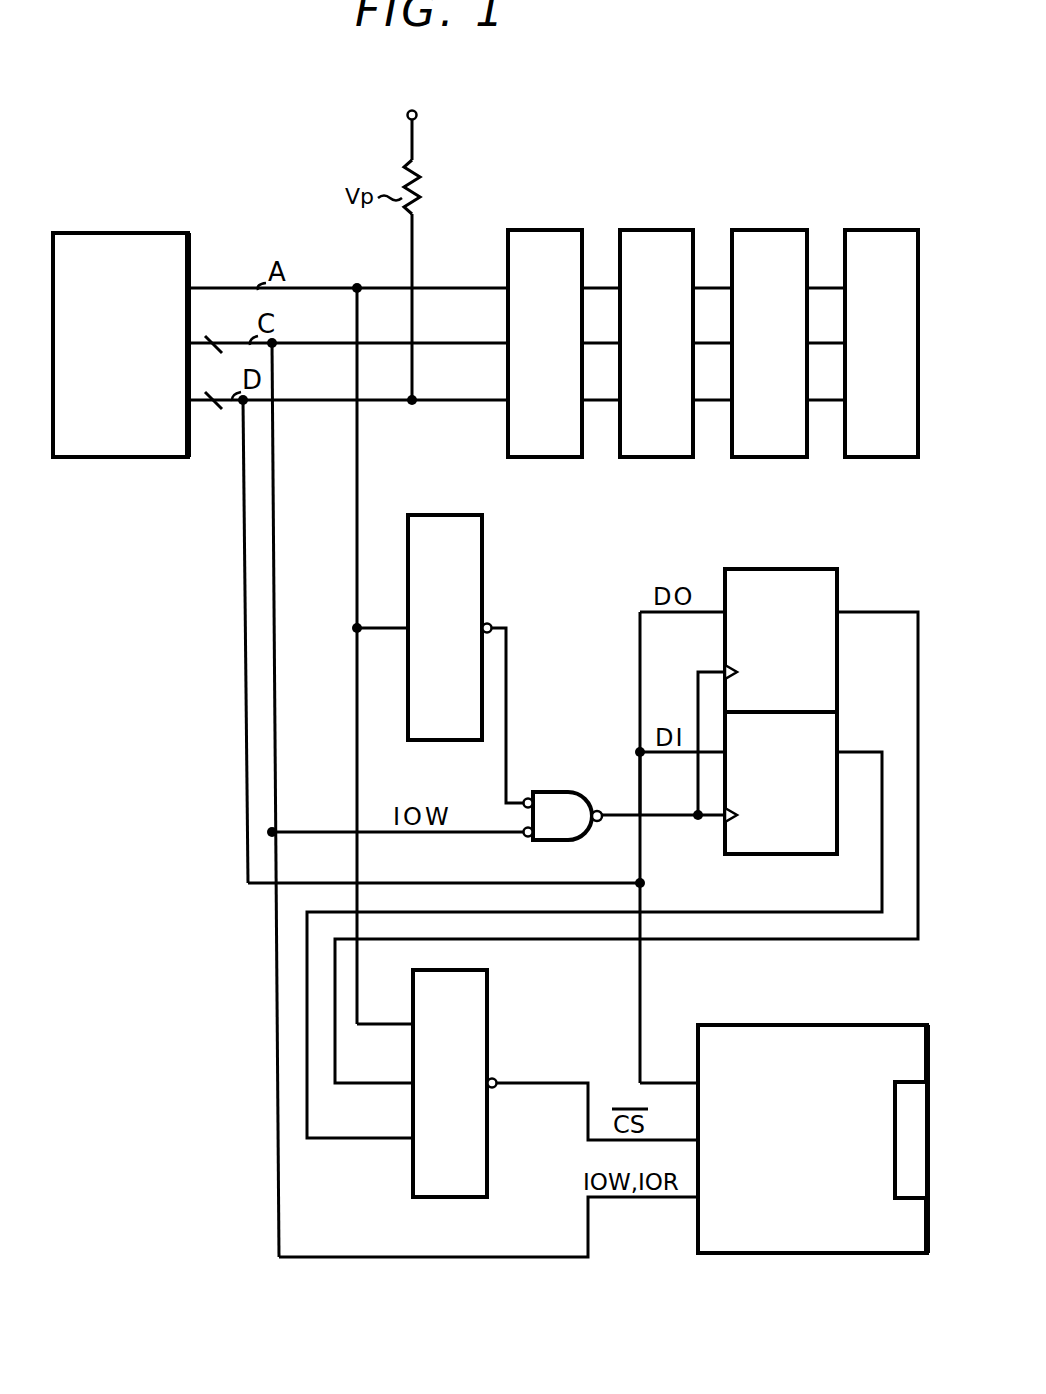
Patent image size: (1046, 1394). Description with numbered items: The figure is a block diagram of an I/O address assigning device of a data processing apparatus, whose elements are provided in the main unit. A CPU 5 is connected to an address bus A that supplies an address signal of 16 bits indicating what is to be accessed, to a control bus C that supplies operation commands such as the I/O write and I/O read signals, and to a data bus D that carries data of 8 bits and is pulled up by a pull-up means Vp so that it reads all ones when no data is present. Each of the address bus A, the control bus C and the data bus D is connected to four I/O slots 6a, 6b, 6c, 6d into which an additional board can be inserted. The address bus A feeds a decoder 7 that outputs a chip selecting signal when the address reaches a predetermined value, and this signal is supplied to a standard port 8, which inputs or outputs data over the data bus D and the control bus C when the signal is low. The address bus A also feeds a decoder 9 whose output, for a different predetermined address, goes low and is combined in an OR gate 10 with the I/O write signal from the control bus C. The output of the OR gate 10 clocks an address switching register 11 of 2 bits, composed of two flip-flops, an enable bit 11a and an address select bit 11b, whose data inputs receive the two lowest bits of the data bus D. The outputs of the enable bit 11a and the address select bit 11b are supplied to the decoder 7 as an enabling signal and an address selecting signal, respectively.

The CPU 5 is at (130, 232).
The bits of the address bus 16 is at (222, 297).
The standard port 8 is at (778, 1025).
The I/O slot 6a is at (541, 230).
The I/O slot 6b is at (656, 230).
The I/O slot 6c is at (768, 230).
The I/O slot 6d is at (880, 230).
The decoder 9 is at (484, 545).
The OR gate 10 is at (558, 792).
The bits of the address switching register 2 is at (652, 793).
The address switching register 11 is at (786, 693).
The enable bit 11a is at (837, 672).
The address select bit 11b is at (727, 846).
The decoder 7 is at (488, 984).